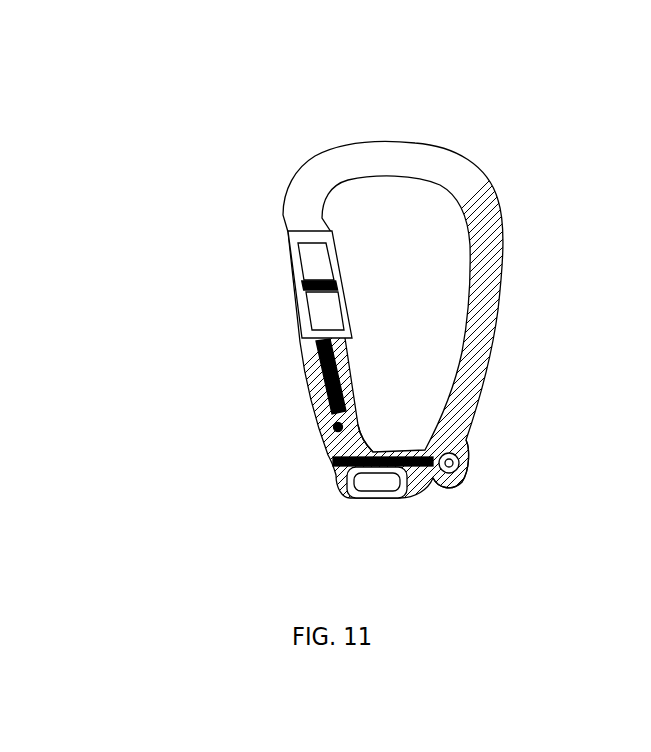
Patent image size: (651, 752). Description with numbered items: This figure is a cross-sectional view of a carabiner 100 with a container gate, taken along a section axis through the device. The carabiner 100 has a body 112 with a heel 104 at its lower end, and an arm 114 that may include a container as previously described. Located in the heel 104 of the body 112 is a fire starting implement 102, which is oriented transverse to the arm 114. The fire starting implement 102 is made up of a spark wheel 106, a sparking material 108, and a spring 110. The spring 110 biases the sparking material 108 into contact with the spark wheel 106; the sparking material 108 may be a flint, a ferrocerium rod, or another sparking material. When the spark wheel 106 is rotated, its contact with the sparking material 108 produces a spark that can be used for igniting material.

The carabiner 100 is at (369, 298).
The fire starting implement 102 is at (481, 479).
The heel 104 is at (429, 497).
The spark wheel 106 is at (481, 461).
The sparking material 108 is at (390, 446).
The spring 110 is at (332, 480).
The body 112 is at (414, 129).
The arm 114 is at (277, 331).